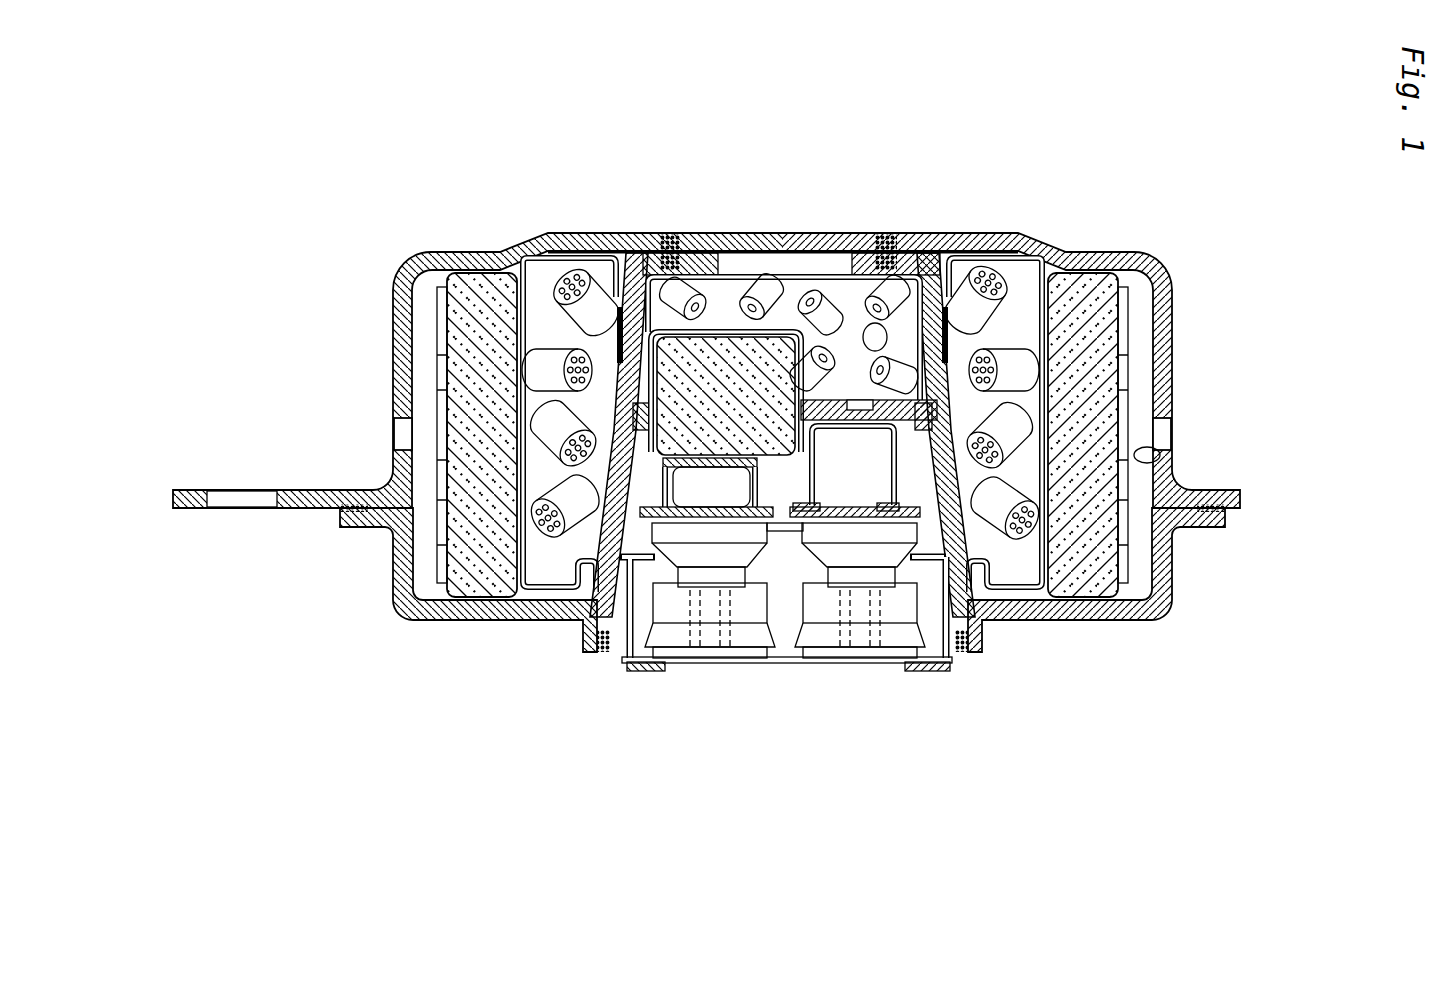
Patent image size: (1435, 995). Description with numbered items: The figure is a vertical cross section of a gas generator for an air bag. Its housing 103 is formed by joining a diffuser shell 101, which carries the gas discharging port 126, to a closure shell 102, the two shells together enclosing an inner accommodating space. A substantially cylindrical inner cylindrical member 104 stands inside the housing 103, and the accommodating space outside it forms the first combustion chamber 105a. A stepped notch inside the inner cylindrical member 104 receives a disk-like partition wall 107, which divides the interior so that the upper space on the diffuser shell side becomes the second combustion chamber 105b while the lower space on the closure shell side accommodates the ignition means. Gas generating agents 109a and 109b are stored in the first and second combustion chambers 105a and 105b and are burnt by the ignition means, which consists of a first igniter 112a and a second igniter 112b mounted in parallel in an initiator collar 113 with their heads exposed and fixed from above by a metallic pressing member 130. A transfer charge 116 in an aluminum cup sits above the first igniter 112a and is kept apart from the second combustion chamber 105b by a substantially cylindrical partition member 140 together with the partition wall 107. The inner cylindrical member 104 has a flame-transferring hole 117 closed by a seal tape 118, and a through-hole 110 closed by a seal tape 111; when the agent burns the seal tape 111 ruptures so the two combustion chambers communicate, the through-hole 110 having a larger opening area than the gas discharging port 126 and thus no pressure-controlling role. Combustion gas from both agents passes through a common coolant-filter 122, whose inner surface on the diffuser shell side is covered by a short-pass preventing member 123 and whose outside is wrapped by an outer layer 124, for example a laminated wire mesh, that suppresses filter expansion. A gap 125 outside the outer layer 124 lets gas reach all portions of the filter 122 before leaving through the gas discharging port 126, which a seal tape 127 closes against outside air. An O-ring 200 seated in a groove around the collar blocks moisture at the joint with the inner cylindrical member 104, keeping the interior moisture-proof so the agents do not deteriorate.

The diffuser shell 101 is at (396, 322).
The closure shell 102 is at (393, 565).
The housing 103 is at (245, 466).
The inner cylindrical member 104 is at (907, 252).
The first combustion chamber 105a is at (535, 278).
The second combustion chamber 105b is at (788, 296).
The partition wall 107 is at (837, 398).
The gas generating agent 109a is at (992, 300).
The gas generating agent 109b is at (740, 296).
The through-hole 110 is at (933, 280).
The seal tape 111 is at (985, 300).
The first igniter 112a is at (707, 537).
The second igniter 112b is at (877, 495).
The initiator collar 113 is at (940, 607).
The transfer charge 116 is at (624, 256).
The flame-transferring hole 117 is at (604, 642).
The seal tape 118 is at (609, 497).
The coolant-filter 122 is at (470, 585).
The short-pass preventing member 123 is at (1030, 262).
The outer layer 124 is at (440, 300).
The gap 125 is at (1170, 595).
The gas discharging port 126 is at (1165, 437).
The seal tape 127 is at (1160, 456).
The metallic pressing member 130 is at (763, 490).
The partition member 140 is at (647, 233).
The O-ring 200 is at (633, 662).